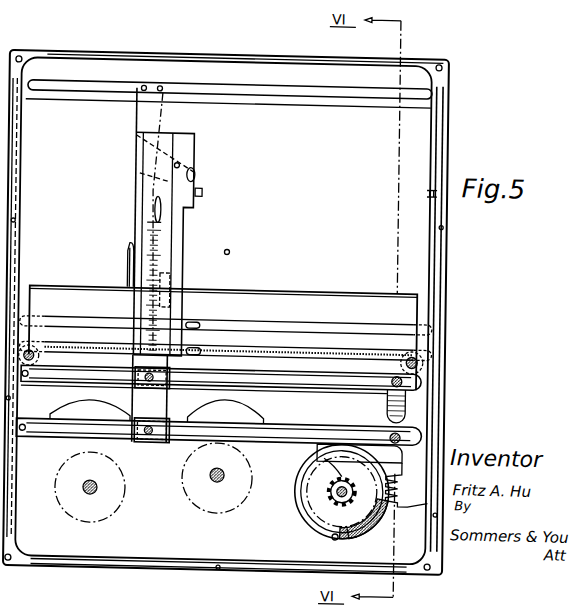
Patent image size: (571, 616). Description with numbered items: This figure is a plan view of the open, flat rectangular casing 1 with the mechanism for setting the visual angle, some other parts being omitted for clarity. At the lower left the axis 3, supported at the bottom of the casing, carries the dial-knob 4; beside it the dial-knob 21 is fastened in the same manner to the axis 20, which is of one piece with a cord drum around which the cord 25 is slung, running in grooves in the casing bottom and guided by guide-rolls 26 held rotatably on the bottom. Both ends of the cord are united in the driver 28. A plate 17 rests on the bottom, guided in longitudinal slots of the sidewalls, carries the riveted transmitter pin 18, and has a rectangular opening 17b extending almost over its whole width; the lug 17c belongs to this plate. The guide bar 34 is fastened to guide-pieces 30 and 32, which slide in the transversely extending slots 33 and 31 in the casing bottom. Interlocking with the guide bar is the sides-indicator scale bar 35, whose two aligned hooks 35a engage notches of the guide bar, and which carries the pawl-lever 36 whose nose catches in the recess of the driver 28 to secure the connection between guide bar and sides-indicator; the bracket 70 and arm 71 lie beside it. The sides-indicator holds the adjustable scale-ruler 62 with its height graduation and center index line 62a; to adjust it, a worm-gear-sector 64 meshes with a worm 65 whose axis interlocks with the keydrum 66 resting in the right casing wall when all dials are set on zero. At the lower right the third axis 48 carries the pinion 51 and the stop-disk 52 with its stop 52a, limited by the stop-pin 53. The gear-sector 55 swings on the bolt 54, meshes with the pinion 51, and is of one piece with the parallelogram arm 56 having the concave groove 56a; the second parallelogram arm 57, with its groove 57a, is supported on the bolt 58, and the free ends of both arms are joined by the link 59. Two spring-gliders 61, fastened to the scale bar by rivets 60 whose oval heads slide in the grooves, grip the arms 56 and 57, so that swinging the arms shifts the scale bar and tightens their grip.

The casing 1 is at (390, 68).
The axis 3 is at (96, 498).
The dial-knob 4 is at (76, 521).
The plate 17 is at (413, 262).
The rectangular opening 17b is at (362, 290).
The lug 17c is at (388, 409).
The transmitter pin 18 is at (235, 246).
The axis 20 is at (216, 482).
The dial-knob 21 is at (203, 506).
The cord 25 is at (314, 350).
The guide-rolls 26 is at (32, 356).
The driver 28 is at (190, 348).
The guide-piece 30 is at (179, 91).
The slot 31 is at (252, 328).
The guide-piece 32 is at (187, 324).
The slot 33 is at (264, 92).
The guide bar 34 is at (140, 121).
The sides-indicator scale bar 35 is at (179, 224).
The hooks 35a is at (151, 210).
The pawl-lever 36 is at (168, 289).
The third axis 48 is at (330, 495).
The pinion 51 is at (338, 501).
The stop-disk 52 is at (371, 520).
The stop 52a is at (355, 530).
The stop-pin 53 is at (338, 535).
The bolt 54 is at (400, 436).
The gear-sector 55 is at (399, 502).
The parallelogram arm 56 is at (259, 437).
The concave groove 56a is at (60, 434).
The second parallelogram arm 57 is at (303, 380).
The concave groove 57a is at (258, 379).
The bolt 58 is at (403, 378).
The link 59 is at (26, 402).
The rivets 60 is at (150, 434).
The spring-gliders 61 is at (168, 399).
The scale-ruler 62 is at (166, 261).
The center index line 62a is at (151, 224).
The worm-gear-sector 64 is at (190, 169).
The worm 65 is at (193, 191).
The keydrum 66 is at (425, 190).
The bracket 70 is at (128, 275).
The arm 71 is at (128, 262).